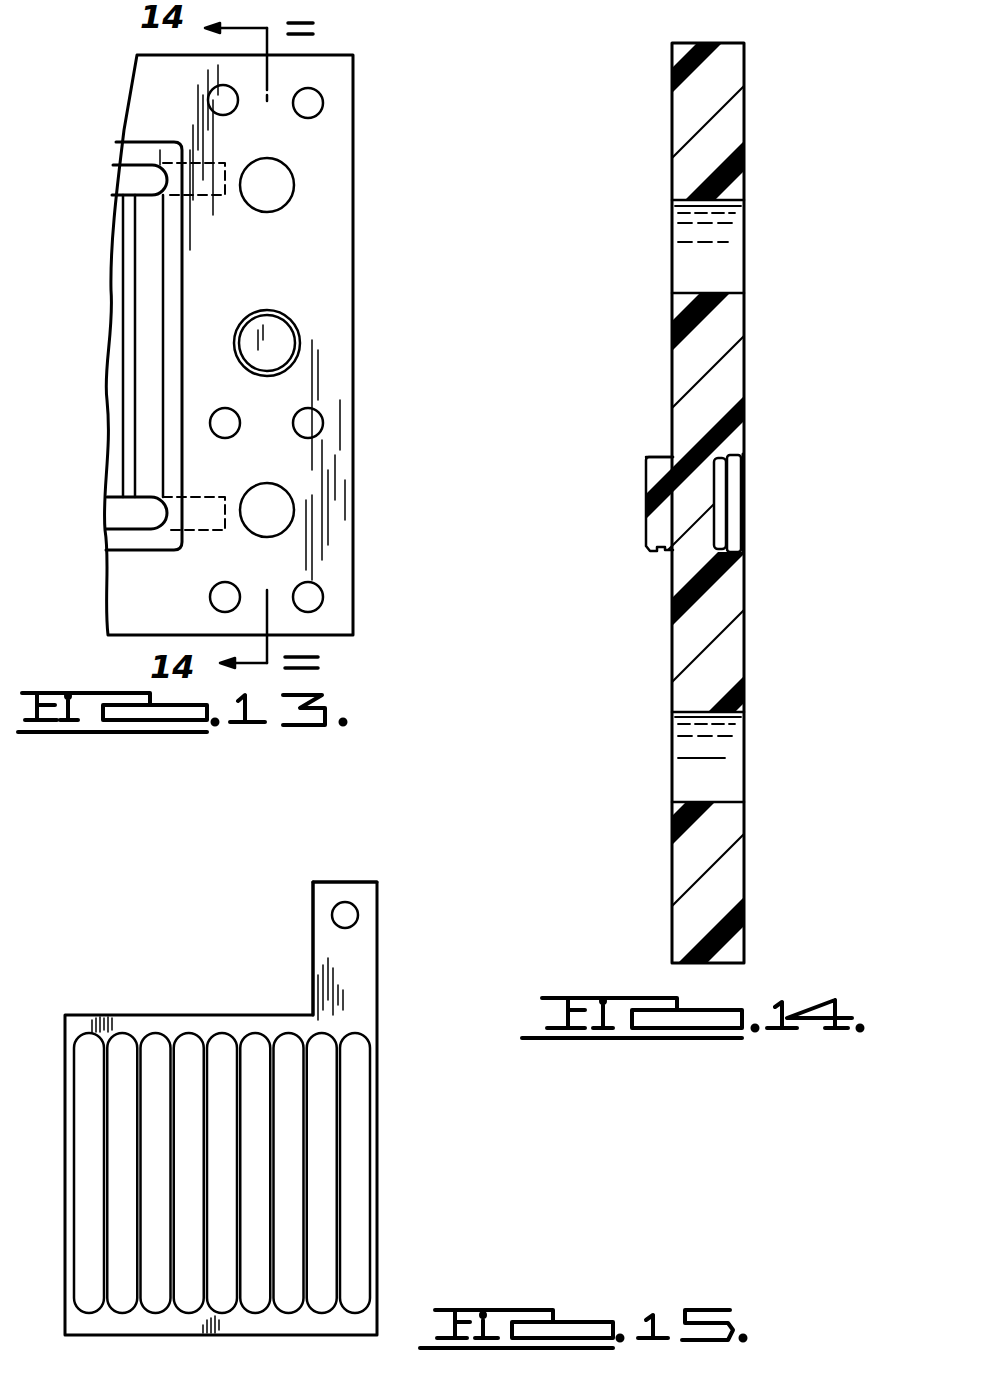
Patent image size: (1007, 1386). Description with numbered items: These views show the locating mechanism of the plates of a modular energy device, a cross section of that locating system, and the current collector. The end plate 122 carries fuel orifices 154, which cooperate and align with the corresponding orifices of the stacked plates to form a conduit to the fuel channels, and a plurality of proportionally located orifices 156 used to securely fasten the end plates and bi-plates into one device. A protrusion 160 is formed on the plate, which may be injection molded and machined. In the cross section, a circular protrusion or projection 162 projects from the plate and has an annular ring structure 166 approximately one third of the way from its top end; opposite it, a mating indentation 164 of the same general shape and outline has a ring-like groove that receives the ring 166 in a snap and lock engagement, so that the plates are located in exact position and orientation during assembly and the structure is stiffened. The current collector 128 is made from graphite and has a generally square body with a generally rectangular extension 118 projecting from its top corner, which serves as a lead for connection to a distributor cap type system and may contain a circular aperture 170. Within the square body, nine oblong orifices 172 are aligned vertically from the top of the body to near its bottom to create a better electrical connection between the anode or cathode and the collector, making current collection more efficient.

In FIG. 13, the end plate 122 is at (353, 55).
In FIG. 14, the end plate 122 is at (744, 882).
In FIG. 13, the fuel orifice 154 is at (277, 188).
In FIG. 14, the fuel orifice 154 is at (722, 240).
In FIG. 13, the orifice 156 is at (317, 103).
In FIG. 13, the protrusion 160 is at (273, 345).
In FIG. 14, the protrusion 162 is at (646, 482).
In FIG. 14, the indentation 164 is at (735, 493).
In FIG. 14, the annular ring structure 166 is at (672, 457).
In FIG. 15, the rectangular extension 118 is at (313, 947).
In FIG. 15, the current collector 128 is at (82, 1017).
In FIG. 15, the circular aperture 170 is at (345, 902).
In FIG. 15, the oblong orifice 172 is at (358, 1155).